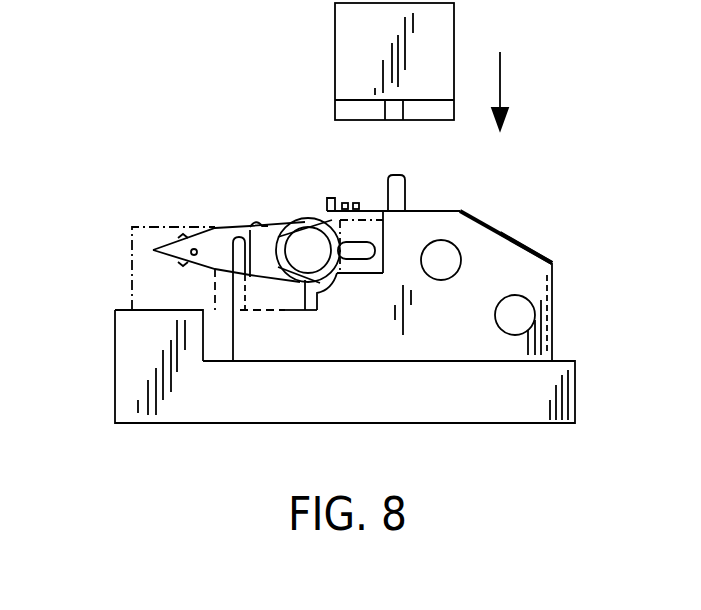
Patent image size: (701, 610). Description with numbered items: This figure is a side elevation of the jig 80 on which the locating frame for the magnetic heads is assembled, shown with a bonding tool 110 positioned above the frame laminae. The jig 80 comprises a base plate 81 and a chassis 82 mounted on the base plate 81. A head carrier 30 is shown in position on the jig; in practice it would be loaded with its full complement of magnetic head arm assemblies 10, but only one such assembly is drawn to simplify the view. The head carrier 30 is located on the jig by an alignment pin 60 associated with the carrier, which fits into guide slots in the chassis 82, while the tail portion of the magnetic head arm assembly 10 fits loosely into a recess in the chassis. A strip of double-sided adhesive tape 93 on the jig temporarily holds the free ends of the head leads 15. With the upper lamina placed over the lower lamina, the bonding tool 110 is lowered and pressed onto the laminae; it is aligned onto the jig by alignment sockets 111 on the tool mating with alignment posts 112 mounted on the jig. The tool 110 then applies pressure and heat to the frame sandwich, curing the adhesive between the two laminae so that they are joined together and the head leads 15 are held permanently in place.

The magnetic head arm assembly 10 is at (251, 226).
The head leads 15 is at (478, 215).
The head carrier 30 is at (131, 240).
The alignment pin 60 is at (303, 214).
The jig 80 is at (100, 350).
The base plate 81 is at (577, 397).
The chassis 82 is at (555, 312).
The double-sided adhesive tape 93 is at (527, 243).
The bonding tool 110 is at (344, 54).
The alignment sockets 111 is at (393, 121).
The alignment posts 112 is at (405, 195).